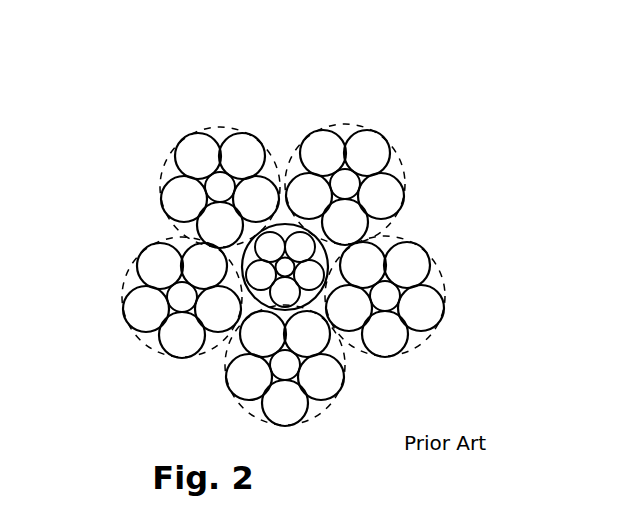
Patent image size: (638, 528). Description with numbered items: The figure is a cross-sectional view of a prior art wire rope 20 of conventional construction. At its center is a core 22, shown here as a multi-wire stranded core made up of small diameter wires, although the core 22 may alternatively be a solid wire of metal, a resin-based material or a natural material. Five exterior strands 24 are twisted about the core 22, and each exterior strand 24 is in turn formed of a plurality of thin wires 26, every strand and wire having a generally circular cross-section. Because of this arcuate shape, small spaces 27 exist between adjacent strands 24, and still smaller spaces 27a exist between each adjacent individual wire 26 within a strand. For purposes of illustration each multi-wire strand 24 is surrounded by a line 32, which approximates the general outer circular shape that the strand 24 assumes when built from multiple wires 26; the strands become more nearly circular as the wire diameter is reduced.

The wire rope 20 is at (268, 223).
The core 22 is at (245, 247).
The exterior strand 24 is at (271, 223).
The wire 26 is at (193, 152).
The space between adjacent strands 27 is at (287, 220).
The space between adjacent wires 27a is at (220, 140).
The line 32 is at (164, 152).